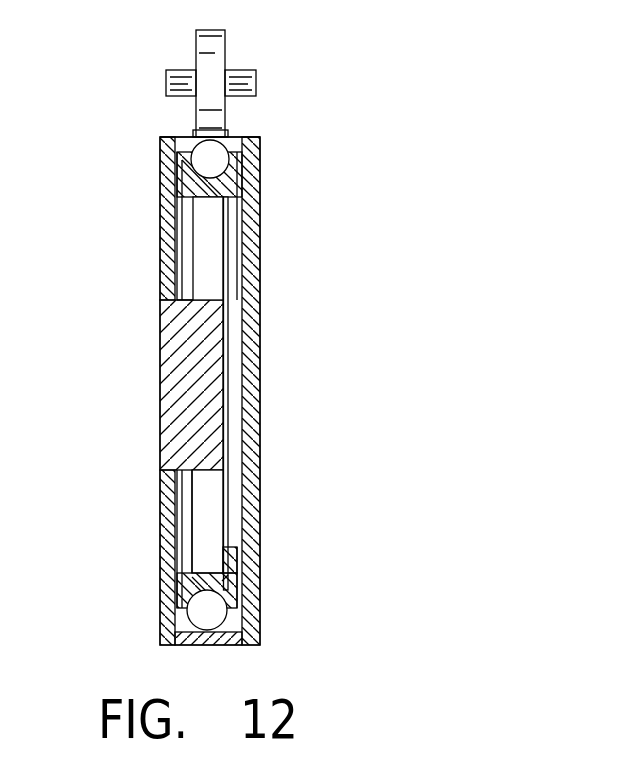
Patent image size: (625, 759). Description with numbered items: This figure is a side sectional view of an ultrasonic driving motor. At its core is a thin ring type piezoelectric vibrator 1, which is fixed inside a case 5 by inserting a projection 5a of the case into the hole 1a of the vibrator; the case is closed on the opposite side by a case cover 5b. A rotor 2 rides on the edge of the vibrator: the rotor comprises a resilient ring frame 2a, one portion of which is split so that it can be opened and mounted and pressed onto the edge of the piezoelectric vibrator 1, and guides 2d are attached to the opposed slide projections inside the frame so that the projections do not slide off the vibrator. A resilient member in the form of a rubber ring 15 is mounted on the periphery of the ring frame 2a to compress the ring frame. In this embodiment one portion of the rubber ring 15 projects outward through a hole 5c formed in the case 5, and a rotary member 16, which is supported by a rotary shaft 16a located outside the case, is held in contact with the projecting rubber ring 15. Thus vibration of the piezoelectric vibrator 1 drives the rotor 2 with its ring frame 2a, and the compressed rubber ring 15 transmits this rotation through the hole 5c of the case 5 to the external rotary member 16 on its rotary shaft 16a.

The ring type piezoelectric vibrator 1 is at (201, 276).
The hole 1a is at (220, 308).
The rotor 2 is at (233, 590).
The ring frame 2a is at (228, 188).
The guides 2d is at (188, 215).
The case 5 is at (160, 548).
The projection 5a is at (175, 342).
The case cover 5b is at (252, 423).
The hole 5c is at (192, 136).
The rubber ring 15 is at (215, 160).
The rotary member 16 is at (200, 39).
The rotary shaft 16a is at (243, 80).